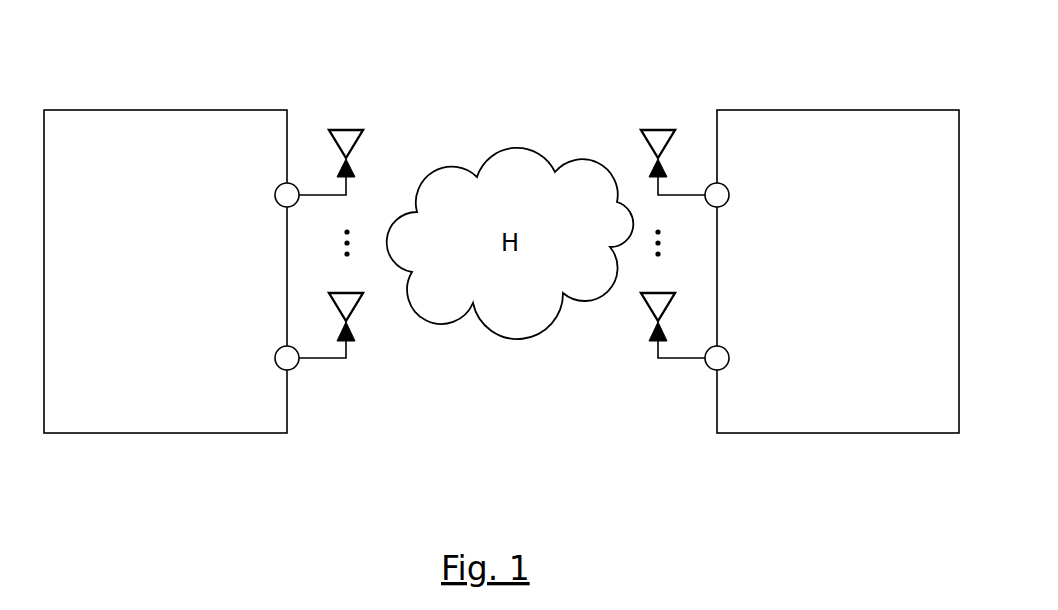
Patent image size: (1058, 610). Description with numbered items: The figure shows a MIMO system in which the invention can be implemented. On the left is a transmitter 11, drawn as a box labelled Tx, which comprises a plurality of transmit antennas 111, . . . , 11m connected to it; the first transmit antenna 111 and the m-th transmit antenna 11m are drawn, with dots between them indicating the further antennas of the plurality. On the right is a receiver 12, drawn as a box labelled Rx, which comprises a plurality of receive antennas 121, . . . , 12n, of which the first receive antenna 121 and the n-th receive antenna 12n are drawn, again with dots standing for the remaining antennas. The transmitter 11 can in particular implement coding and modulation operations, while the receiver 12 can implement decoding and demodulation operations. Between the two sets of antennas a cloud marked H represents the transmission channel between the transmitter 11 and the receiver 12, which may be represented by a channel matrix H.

The transmitter 11 is at (160, 433).
The receiver 12 is at (838, 435).
The transmit antenna 111 is at (360, 138).
The transmit antenna 11m is at (358, 306).
The receive antenna 121 is at (647, 138).
The receive antenna 12n is at (643, 307).